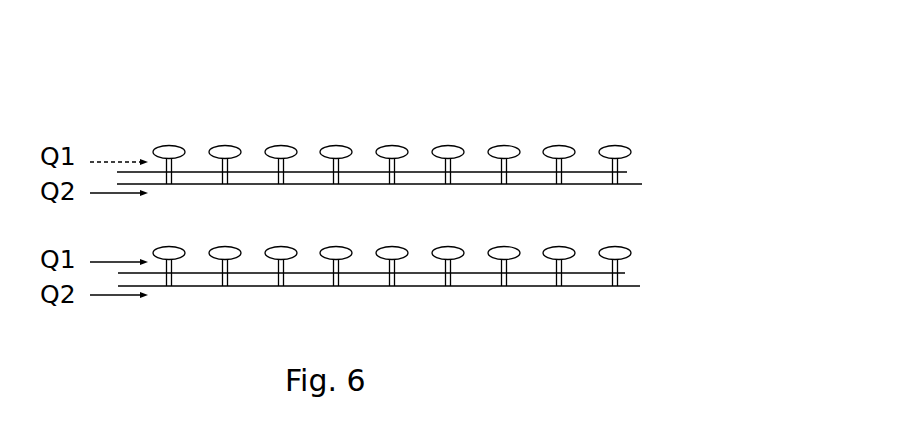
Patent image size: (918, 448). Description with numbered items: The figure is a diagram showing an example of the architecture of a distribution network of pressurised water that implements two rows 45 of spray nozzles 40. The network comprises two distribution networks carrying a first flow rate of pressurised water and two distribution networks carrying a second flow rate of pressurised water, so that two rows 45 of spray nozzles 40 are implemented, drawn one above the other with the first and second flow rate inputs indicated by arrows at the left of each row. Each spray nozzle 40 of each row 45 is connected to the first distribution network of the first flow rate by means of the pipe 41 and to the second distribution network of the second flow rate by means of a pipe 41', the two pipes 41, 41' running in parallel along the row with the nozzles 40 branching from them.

The spray nozzle 40 is at (503, 146).
The pipe 41 is at (446, 199).
The pipe 41' is at (446, 282).
The row of spray nozzles 45 is at (628, 123).